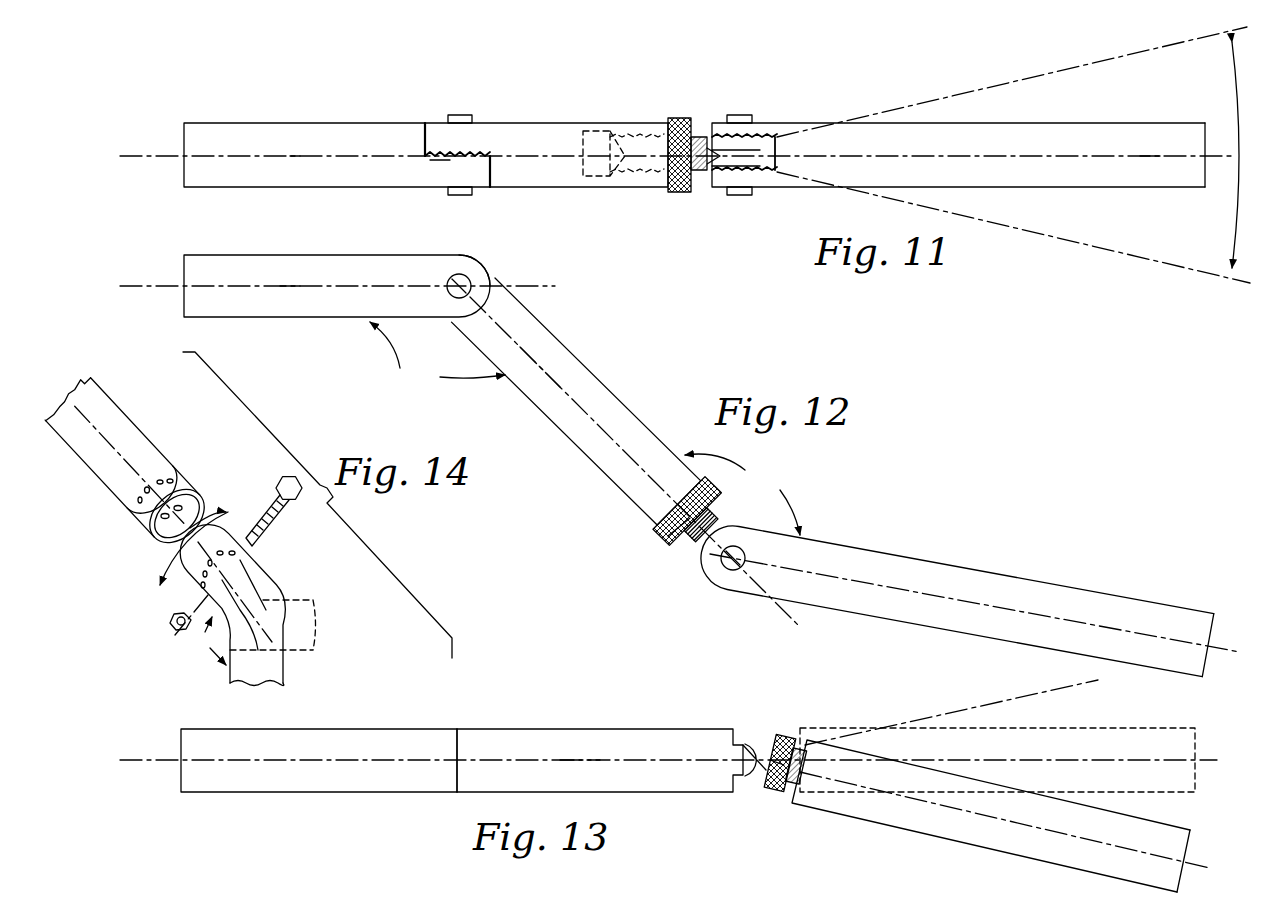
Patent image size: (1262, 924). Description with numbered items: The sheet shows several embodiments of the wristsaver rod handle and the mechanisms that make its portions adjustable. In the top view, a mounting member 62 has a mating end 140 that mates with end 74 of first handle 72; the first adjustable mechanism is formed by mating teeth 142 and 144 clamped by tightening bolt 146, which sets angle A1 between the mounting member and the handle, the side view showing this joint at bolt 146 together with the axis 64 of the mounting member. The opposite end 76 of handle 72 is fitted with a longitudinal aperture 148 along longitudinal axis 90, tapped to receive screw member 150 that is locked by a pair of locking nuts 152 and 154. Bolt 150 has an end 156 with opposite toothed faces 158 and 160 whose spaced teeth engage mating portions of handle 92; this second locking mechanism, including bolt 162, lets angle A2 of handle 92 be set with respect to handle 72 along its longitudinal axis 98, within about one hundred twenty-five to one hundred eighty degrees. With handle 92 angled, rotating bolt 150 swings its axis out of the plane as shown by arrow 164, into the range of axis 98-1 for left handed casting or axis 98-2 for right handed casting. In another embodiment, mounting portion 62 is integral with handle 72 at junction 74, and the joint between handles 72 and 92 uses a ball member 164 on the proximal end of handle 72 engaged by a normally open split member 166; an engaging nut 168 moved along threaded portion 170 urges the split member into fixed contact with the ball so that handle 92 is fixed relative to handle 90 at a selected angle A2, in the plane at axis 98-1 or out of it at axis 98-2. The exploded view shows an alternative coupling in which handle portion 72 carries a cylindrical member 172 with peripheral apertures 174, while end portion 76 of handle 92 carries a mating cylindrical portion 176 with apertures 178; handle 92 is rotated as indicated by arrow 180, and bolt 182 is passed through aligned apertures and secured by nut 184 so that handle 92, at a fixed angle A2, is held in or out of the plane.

In FIG. 11, the mounting member 62 is at (344, 123).
In FIG. 12, the mounting member 62 is at (313, 255).
In FIG. 13, the mounting member 62 is at (312, 729).
In FIG. 11, the first tube axis 64 is at (298, 158).
In FIG. 12, the first tube axis 64 is at (290, 288).
In FIG. 11, the first handle 72 is at (532, 123).
In FIG. 12, the first handle 72 is at (638, 415).
In FIG. 13, the first handle 72 is at (527, 729).
In FIG. 14, the first handle 72 is at (122, 415).
In FIG. 11, the end 74 is at (436, 130).
In FIG. 13, the end 74 is at (460, 743).
In FIG. 11, the opposite end 76 is at (648, 190).
In FIG. 14, the opposite end 76 is at (285, 590).
In FIG. 12, the longitudinal axis 90 is at (572, 388).
In FIG. 13, the longitudinal axis 90 is at (604, 760).
In FIG. 11, the handle 92 is at (1157, 123).
In FIG. 12, the handle 92 is at (1155, 608).
In FIG. 13, the handle 92 is at (1180, 830).
In FIG. 14, the handle 92 is at (275, 665).
In FIG. 11, the longitudinal axis 98 is at (1007, 156).
In FIG. 12, the longitudinal axis 98 is at (1005, 610).
In FIG. 13, the longitudinal axis 98 is at (935, 802).
In FIG. 11, the longitudinal axis range 98-1 is at (1022, 75).
In FIG. 13, the longitudinal axis range 98-1 is at (1098, 758).
In FIG. 11, the longitudinal axis range 98-2 is at (1143, 255).
In FIG. 13, the longitudinal axis range 98-2 is at (977, 706).
In FIG. 11, the mating end 140 is at (482, 185).
In FIG. 12, the mating end 140 is at (472, 262).
In FIG. 11, the mating teeth 142 is at (475, 156).
In FIG. 11, the mating teeth 144 is at (440, 160).
In FIG. 11, the tightening bolt 146 is at (464, 115).
In FIG. 12, the tightening bolt 146 is at (458, 274).
In FIG. 11, the longitudinal aperture 148 is at (600, 130).
In FIG. 11, the screw member 150 is at (636, 130).
In FIG. 12, the screw member 150 is at (685, 545).
In FIG. 11, the locking nut 152 is at (677, 118).
In FIG. 12, the locking nut 152 is at (665, 530).
In FIG. 11, the locking nut 154 is at (697, 137).
In FIG. 12, the locking nut 154 is at (690, 535).
In FIG. 11, the end 156 is at (768, 172).
In FIG. 11, the toothed face 158 is at (772, 136).
In FIG. 11, the toothed face 160 is at (728, 170).
In FIG. 11, the bolt 162 is at (746, 115).
In FIG. 12, the bolt 162 is at (730, 570).
In FIG. 11, the arrow 164 is at (1241, 155).
In FIG. 13, the arrow 164 is at (748, 742).
In FIG. 13, the split member 166 is at (780, 735).
In FIG. 13, the engaging nut 168 is at (773, 783).
In FIG. 13, the threaded portion 170 is at (797, 786).
In FIG. 14, the cylindrical member 172 is at (168, 490).
In FIG. 14, the apertures 174 is at (165, 480).
In FIG. 14, the cylindrical portion 176 is at (230, 535).
In FIG. 14, the apertures 178 is at (225, 555).
In FIG. 14, the arrow 180 is at (158, 568).
In FIG. 14, the bolt 182 is at (283, 505).
In FIG. 14, the nut 184 is at (170, 625).
In FIG. 12, the angle A1 is at (437, 353).
In FIG. 12, the angle A2 is at (742, 494).
In FIG. 14, the angle A2 is at (208, 641).